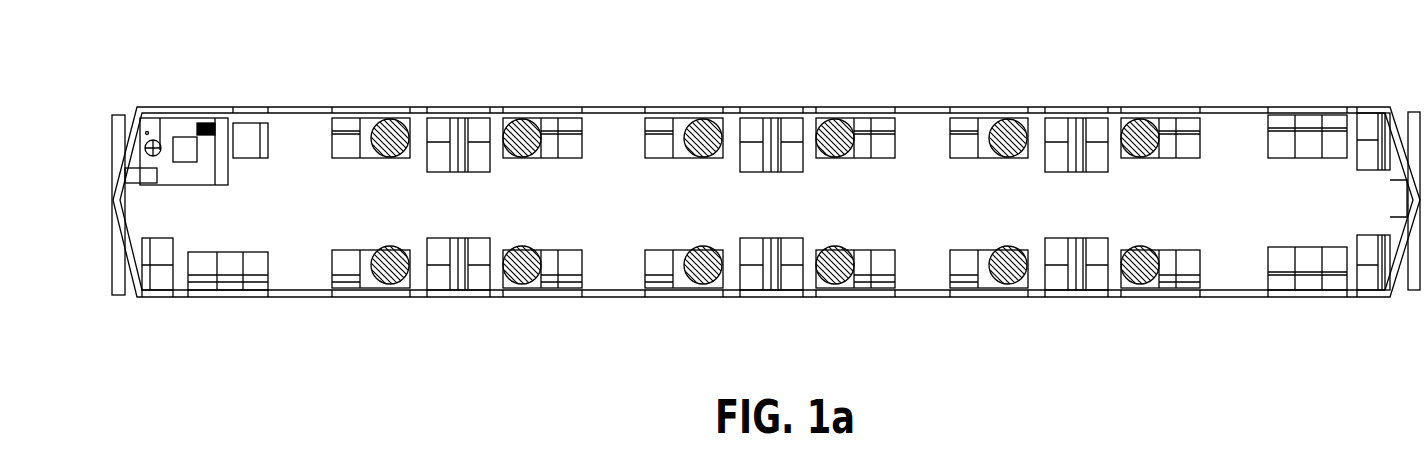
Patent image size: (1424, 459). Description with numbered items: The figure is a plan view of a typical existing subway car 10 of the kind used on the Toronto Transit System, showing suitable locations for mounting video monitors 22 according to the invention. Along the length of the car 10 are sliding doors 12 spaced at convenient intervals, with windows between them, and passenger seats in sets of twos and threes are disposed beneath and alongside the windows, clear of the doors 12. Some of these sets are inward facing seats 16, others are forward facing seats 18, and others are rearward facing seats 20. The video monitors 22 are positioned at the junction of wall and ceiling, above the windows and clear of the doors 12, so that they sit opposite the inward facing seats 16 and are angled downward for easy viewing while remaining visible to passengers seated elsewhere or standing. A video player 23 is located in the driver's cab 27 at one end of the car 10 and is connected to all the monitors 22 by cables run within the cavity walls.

The subway car 10 is at (787, 216).
The sliding doors 12 is at (605, 120).
The inward facing seats 16 is at (340, 135).
The forward facing seats 18 is at (450, 130).
The rearward facing seats 20 is at (488, 130).
The video monitors 22 is at (392, 125).
The video player 23 is at (205, 125).
The driver's cab 27 is at (185, 145).